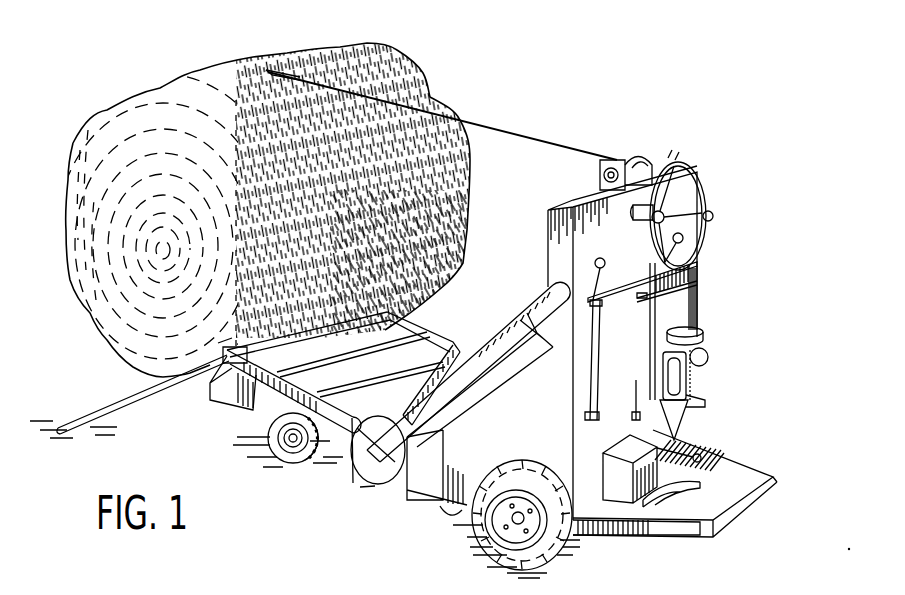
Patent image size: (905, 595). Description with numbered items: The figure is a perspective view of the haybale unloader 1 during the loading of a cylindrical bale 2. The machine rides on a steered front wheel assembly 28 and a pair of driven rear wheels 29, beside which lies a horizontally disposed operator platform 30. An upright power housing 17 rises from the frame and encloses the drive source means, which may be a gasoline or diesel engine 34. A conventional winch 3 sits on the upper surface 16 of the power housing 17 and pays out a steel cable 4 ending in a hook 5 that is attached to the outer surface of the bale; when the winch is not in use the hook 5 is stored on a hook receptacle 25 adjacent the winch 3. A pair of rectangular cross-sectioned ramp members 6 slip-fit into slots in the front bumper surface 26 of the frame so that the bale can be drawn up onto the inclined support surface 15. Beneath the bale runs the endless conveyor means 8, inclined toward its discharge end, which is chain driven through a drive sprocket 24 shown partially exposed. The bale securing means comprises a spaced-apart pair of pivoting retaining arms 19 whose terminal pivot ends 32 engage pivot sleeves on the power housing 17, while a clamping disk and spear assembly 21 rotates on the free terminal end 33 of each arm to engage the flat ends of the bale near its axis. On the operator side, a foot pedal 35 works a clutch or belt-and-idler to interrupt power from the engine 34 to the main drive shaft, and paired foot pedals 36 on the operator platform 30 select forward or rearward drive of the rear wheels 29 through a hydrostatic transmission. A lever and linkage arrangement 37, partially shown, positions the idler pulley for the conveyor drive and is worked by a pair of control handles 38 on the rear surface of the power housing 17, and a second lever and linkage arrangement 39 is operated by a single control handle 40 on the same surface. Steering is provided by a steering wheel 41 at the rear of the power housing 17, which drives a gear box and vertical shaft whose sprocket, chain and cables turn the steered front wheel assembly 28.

The haybale unloader 1 is at (565, 108).
The cylindrical bale 2 is at (174, 78).
The winch 3 is at (607, 162).
The steel cable 4 is at (487, 122).
The hook 5 is at (296, 68).
The ramp members 6 is at (160, 390).
The endless conveyor means 8 is at (412, 330).
The support surface 15 is at (258, 392).
The upper surface of power housing 16 is at (557, 210).
The power housing 17 is at (550, 423).
The retaining arms 19 is at (473, 353).
The clamping disk and spear assembly 21 is at (383, 472).
The drive sprocket 24 is at (442, 503).
The hook receptacle 25 is at (669, 158).
The front bumper surface 26 is at (225, 365).
The steered front wheel assembly 28 is at (291, 463).
The driven rear wheels 29 is at (543, 543).
The operator platform 30 is at (727, 492).
The terminal pivot ends 32 is at (516, 314).
The free terminal end 33 is at (357, 480).
The engine 34 is at (705, 332).
The foot pedal 35 is at (700, 460).
The paired foot pedals 36 is at (698, 488).
The lever and linkage arrangement 37 is at (690, 374).
The control handles 38 is at (713, 215).
The lever and linkage arrangement 39 is at (652, 296).
The control handle 40 is at (683, 239).
The steering wheel 41 is at (702, 174).